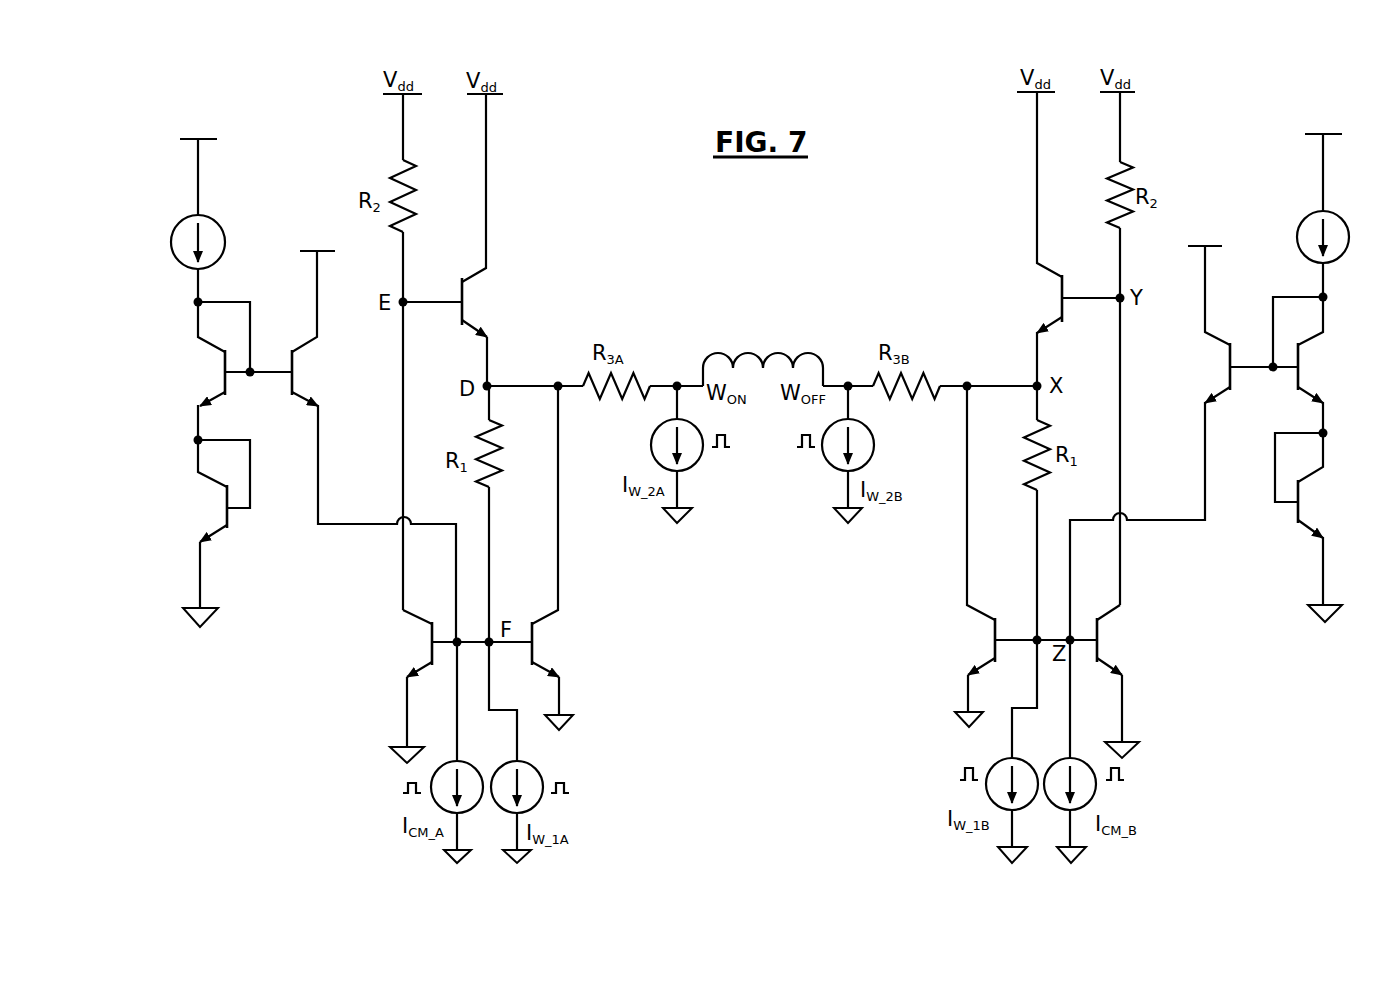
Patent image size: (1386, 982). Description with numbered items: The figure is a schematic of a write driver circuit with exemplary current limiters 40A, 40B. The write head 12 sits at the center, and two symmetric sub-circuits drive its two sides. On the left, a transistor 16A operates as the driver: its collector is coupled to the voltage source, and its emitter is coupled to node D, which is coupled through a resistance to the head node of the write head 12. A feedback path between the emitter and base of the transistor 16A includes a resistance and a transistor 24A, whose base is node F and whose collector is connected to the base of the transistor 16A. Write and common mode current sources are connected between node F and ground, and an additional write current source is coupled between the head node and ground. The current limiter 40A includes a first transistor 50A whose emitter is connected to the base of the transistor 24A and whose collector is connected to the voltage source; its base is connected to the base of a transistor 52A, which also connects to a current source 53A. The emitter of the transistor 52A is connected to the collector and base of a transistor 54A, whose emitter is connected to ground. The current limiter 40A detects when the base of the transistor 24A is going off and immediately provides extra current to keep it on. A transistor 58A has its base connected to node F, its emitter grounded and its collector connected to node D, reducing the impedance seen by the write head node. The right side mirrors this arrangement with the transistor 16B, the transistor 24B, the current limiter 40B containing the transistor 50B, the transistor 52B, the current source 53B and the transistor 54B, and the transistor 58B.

The write head 12 is at (741, 310).
The transistor 16A is at (480, 260).
The transistor 16B is at (1058, 318).
The transistor 24A is at (411, 620).
The transistor 24B is at (1108, 655).
The current limiter 40A is at (285, 174).
The current limiter 40B is at (1220, 169).
The first transistor 50A is at (318, 347).
The first transistor 50B is at (1218, 385).
The transistor 52A is at (212, 350).
The transistor 52B is at (1313, 380).
The current source 53A is at (212, 220).
The current source 53B is at (1297, 233).
The transistor 54A is at (207, 488).
The transistor 54B is at (1308, 517).
The transistor 58A is at (560, 617).
The transistor 58B is at (978, 620).